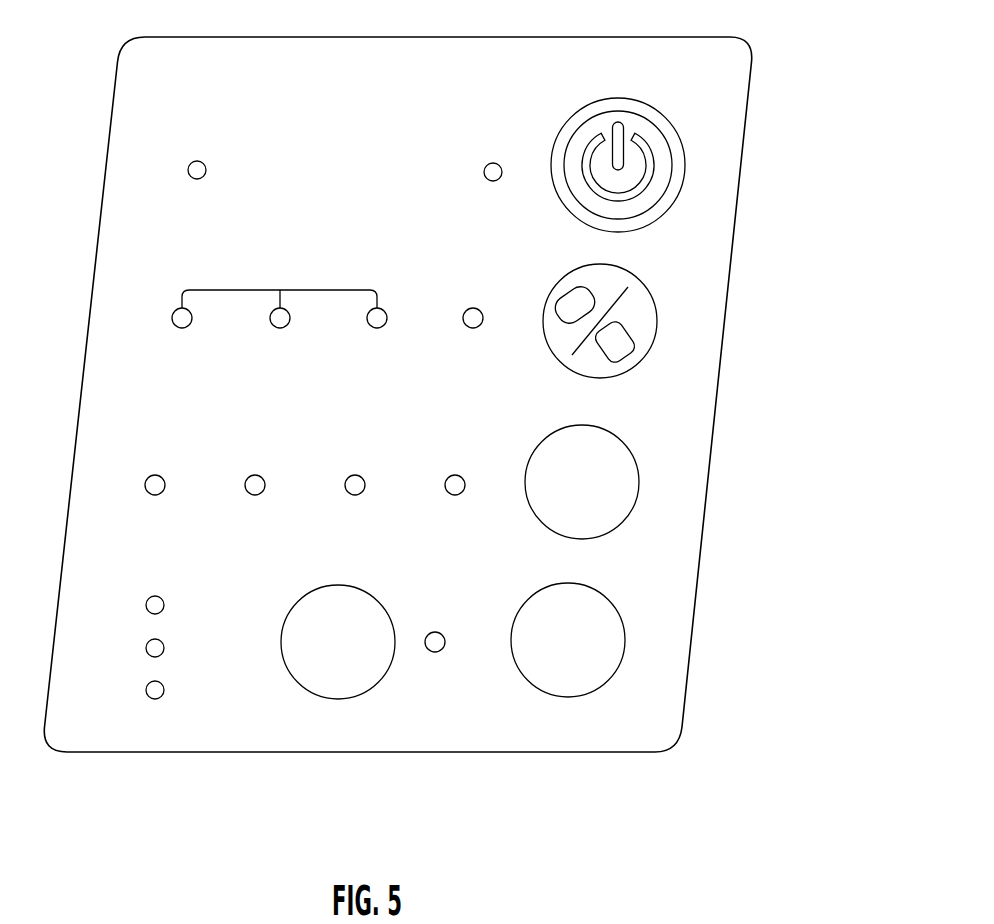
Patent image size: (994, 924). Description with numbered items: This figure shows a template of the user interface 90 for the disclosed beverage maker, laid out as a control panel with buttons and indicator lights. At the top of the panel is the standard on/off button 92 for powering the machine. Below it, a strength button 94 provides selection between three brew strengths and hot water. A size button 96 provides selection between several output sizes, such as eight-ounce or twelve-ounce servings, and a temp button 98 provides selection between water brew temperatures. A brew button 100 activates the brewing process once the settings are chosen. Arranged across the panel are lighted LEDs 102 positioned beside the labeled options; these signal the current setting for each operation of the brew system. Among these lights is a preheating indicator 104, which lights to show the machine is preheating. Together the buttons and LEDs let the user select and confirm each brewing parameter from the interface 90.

The user interface 90 is at (807, 80).
The on/off button 92 is at (657, 193).
The strength button 94 is at (643, 337).
The size button 96 is at (622, 506).
The temp button 98 is at (347, 687).
The brew button 100 is at (578, 686).
The lighted LEDs 102 is at (368, 323).
The preheating indicator 104 is at (188, 170).